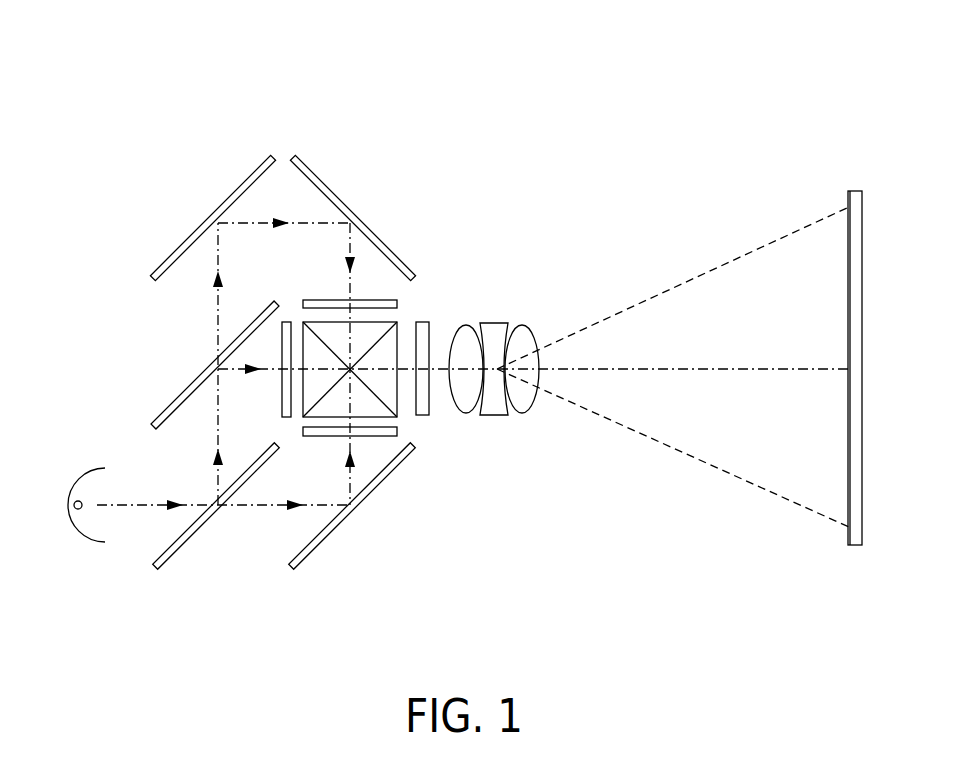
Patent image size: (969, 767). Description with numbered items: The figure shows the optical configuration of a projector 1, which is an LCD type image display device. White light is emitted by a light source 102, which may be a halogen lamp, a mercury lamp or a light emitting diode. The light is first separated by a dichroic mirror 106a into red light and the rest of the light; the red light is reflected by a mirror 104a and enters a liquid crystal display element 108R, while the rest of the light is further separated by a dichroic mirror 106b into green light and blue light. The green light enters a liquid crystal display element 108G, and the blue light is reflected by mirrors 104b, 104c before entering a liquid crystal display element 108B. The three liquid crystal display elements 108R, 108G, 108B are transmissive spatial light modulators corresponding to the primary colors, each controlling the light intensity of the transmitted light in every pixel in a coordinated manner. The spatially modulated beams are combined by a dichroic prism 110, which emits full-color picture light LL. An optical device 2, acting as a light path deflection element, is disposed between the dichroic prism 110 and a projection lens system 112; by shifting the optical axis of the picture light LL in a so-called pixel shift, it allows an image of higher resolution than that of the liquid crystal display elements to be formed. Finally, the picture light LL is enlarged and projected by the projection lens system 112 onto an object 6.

The projector 1 is at (734, 121).
The optical device 2 is at (432, 400).
The object 6 is at (853, 547).
The light source 102 is at (85, 541).
The mirror 104a is at (324, 548).
The mirror 104b is at (240, 186).
The mirror 104c is at (330, 184).
The dichroic mirror 106a is at (184, 548).
The dichroic mirror 106b is at (178, 398).
The liquid crystal display element 108R is at (327, 440).
The liquid crystal display element 108G is at (276, 386).
The liquid crystal display element 108B is at (400, 300).
The dichroic prism 110 is at (400, 322).
The projection lens system 112 is at (453, 419).
The picture light LL is at (407, 417).